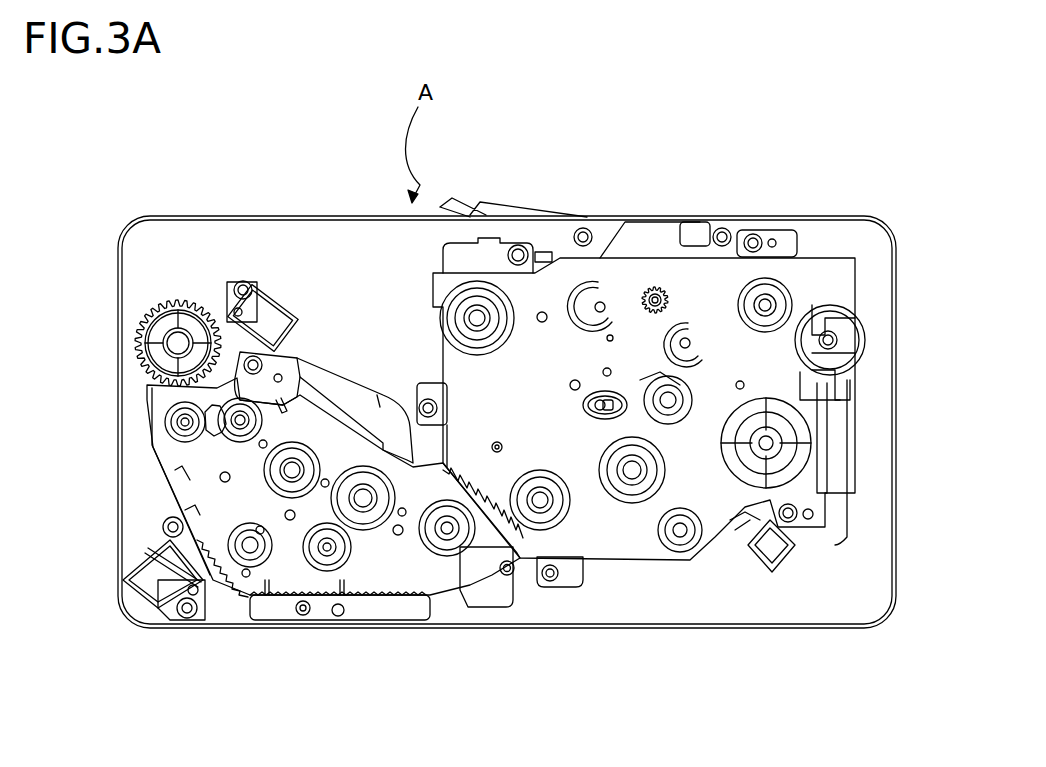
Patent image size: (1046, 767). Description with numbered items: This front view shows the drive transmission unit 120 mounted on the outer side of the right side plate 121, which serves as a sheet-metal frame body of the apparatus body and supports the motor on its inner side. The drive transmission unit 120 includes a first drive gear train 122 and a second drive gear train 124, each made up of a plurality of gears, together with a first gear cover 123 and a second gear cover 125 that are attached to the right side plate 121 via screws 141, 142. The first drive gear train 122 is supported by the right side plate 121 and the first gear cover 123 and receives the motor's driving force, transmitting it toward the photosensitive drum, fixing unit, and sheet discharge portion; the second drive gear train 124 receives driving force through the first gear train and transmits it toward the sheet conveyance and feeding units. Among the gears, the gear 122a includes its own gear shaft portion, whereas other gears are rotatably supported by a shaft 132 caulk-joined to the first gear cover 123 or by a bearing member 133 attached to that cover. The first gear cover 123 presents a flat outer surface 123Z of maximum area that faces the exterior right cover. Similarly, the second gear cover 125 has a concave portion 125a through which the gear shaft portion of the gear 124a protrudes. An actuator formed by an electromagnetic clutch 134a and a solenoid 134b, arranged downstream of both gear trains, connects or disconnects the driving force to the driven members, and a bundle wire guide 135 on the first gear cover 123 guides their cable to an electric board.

The drive transmission unit 120 is at (821, 245).
The right side plate 121 is at (172, 268).
The first drive gear train 122 is at (657, 297).
The gear 122a is at (541, 501).
The first gear cover 123 is at (605, 528).
The outer surface 123Z is at (647, 550).
The second drive gear train 124 is at (235, 577).
The gear 124a is at (363, 500).
The second gear cover 125 is at (378, 578).
The concave portion 125a is at (385, 507).
The shaft 132 is at (500, 452).
The bearing member 133 is at (478, 318).
The electromagnetic clutch 134a is at (843, 505).
The solenoid 134b is at (270, 327).
The bundle wire guide 135 is at (763, 537).
The screw 141 is at (417, 387).
The screw 142 is at (173, 520).